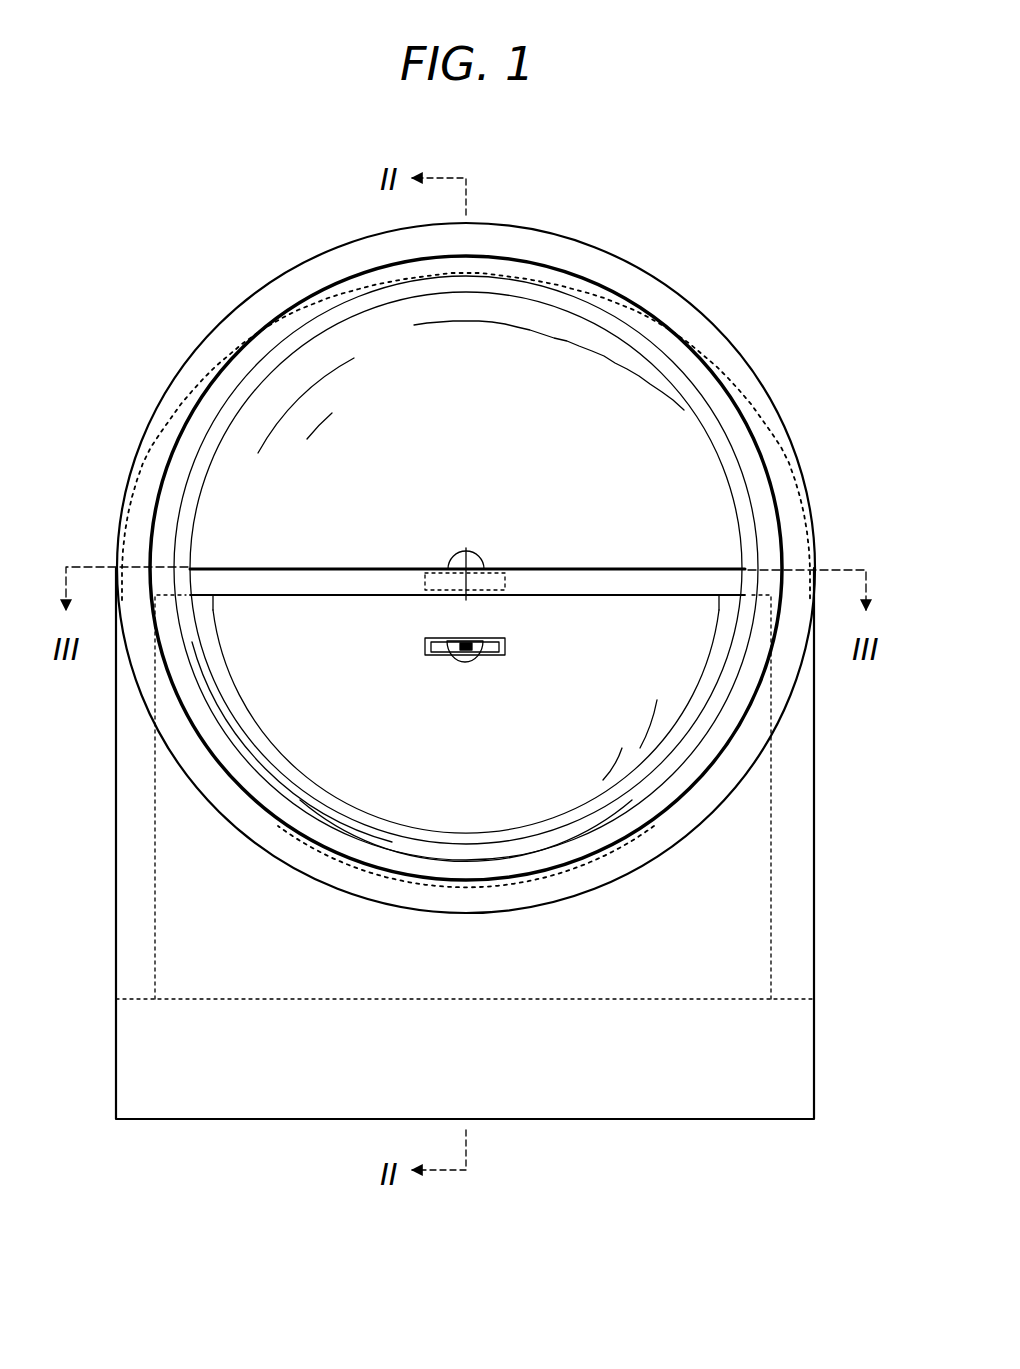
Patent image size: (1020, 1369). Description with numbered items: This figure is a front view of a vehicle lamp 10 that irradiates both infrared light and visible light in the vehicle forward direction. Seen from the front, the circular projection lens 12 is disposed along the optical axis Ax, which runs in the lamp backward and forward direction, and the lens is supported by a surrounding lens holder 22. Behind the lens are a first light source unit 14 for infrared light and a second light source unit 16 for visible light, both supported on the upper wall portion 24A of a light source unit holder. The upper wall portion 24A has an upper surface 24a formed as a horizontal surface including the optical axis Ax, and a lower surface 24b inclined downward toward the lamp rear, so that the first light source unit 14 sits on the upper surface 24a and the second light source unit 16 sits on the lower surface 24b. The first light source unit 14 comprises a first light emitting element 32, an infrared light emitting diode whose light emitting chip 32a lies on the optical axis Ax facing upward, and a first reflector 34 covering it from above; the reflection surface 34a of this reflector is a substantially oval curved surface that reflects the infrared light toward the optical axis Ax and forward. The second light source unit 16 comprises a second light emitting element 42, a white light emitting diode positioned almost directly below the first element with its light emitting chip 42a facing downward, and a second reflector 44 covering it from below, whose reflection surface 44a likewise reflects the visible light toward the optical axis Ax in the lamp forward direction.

The vehicle lamp 10 is at (810, 218).
The projection lens 12 is at (298, 316).
The first light source unit 14 is at (168, 280).
The second light source unit 16 is at (160, 808).
The lens holder 22 is at (686, 284).
The upper wall portion 24A is at (698, 580).
The upper surface 24a is at (378, 566).
The lower surface 24b is at (373, 644).
The first light emitting element 32 is at (482, 530).
The light emitting chip 32a is at (494, 561).
The first reflector 34 is at (140, 437).
The reflection surface 34a is at (544, 357).
The second light emitting element 42 is at (487, 680).
The light emitting chip 42a is at (468, 666).
The second reflector 44 is at (437, 892).
The reflection surface 44a is at (252, 684).
The optical axis Ax is at (456, 552).